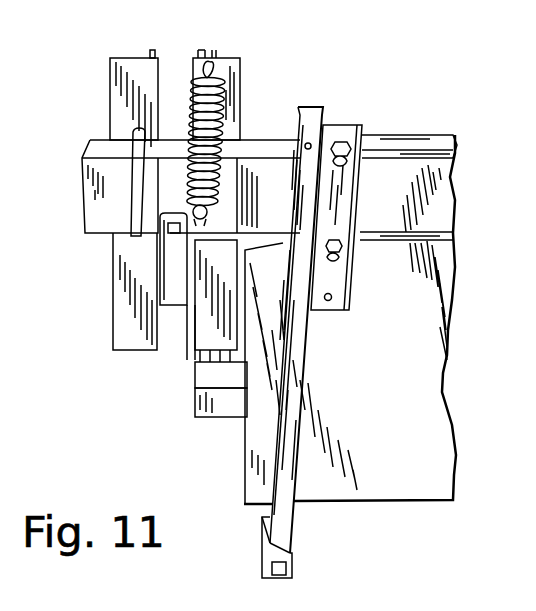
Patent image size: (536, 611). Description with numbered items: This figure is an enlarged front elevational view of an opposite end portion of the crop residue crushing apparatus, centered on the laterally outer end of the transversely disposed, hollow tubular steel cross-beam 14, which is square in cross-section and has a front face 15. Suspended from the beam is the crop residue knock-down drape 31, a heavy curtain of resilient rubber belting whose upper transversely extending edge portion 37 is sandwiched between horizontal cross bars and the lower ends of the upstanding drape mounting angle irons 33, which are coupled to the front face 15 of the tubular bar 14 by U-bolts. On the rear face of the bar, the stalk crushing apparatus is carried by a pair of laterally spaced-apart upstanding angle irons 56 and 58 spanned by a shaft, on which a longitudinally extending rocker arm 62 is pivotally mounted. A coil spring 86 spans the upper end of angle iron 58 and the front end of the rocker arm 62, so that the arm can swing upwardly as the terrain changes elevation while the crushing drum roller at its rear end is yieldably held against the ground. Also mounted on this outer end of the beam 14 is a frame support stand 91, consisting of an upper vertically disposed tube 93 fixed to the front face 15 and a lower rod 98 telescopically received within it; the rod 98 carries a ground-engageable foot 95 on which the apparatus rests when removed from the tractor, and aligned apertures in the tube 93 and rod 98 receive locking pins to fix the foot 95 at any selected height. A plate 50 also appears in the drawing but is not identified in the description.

The cross-beam 14 is at (418, 135).
The front face 15 is at (400, 201).
The drape 31 is at (393, 417).
The drape mounting angle irons 33 is at (347, 124).
The upper transversely extending edge portion 37 is at (400, 318).
The support plate 50 is at (255, 463).
The angle iron 56 is at (158, 58).
The angle iron 58 is at (238, 58).
The rocker arm 62 is at (180, 302).
The coil spring 86 is at (227, 120).
The frame support stand 91 is at (364, 74).
The upper vertically disposed tube 93 is at (300, 222).
The ground-engageable foot 95 is at (296, 575).
The lower rod 98 is at (282, 430).